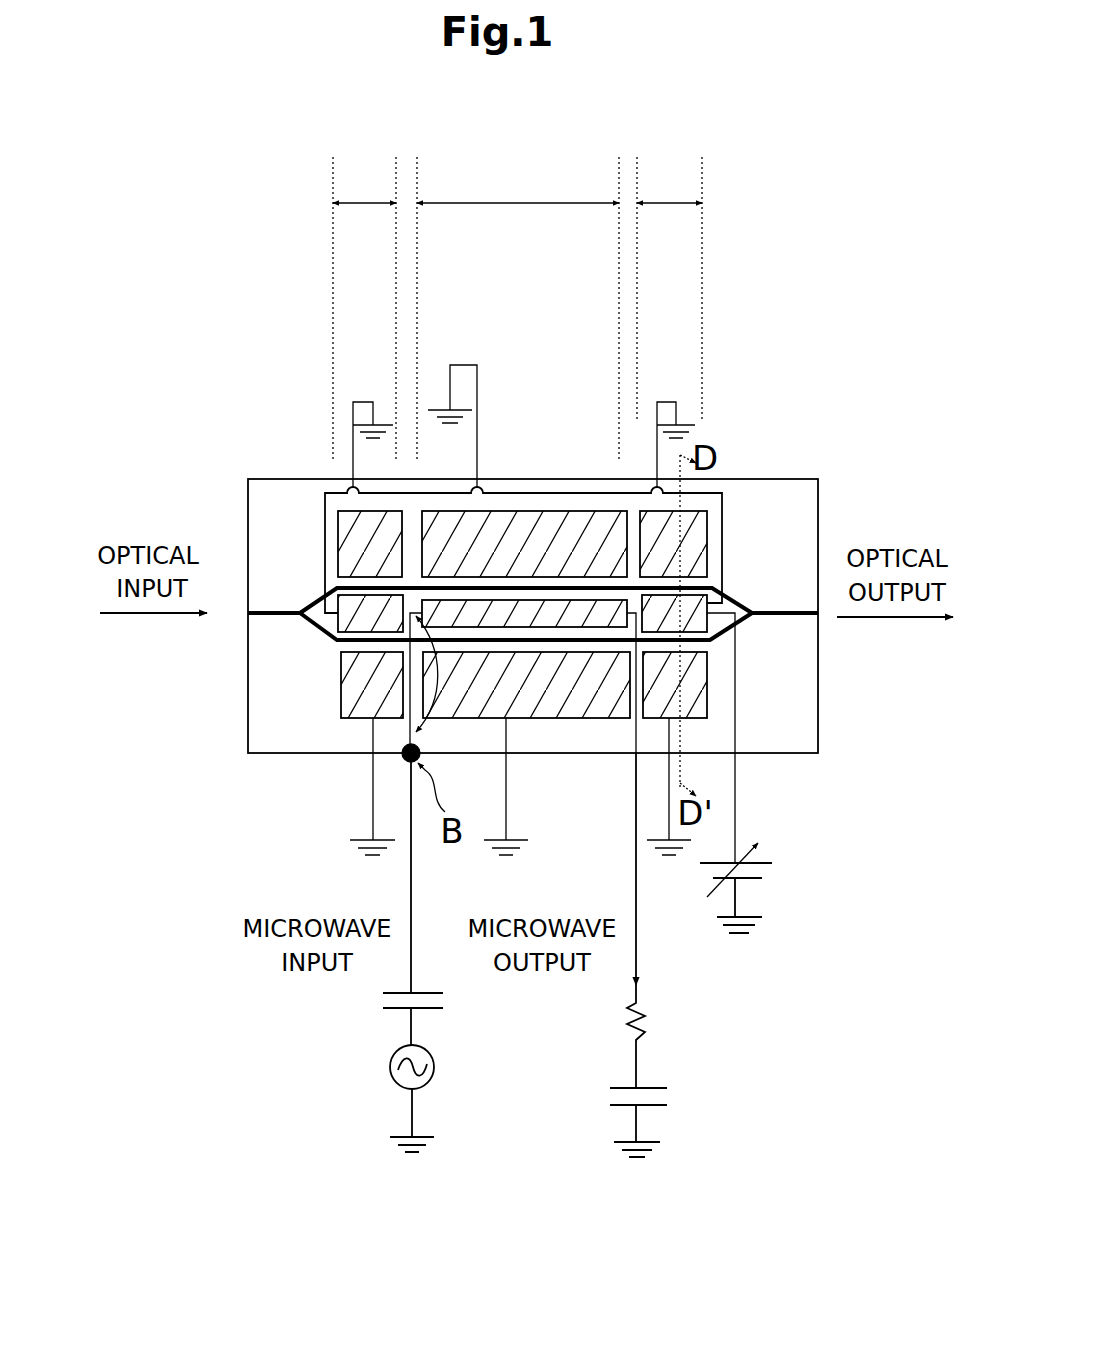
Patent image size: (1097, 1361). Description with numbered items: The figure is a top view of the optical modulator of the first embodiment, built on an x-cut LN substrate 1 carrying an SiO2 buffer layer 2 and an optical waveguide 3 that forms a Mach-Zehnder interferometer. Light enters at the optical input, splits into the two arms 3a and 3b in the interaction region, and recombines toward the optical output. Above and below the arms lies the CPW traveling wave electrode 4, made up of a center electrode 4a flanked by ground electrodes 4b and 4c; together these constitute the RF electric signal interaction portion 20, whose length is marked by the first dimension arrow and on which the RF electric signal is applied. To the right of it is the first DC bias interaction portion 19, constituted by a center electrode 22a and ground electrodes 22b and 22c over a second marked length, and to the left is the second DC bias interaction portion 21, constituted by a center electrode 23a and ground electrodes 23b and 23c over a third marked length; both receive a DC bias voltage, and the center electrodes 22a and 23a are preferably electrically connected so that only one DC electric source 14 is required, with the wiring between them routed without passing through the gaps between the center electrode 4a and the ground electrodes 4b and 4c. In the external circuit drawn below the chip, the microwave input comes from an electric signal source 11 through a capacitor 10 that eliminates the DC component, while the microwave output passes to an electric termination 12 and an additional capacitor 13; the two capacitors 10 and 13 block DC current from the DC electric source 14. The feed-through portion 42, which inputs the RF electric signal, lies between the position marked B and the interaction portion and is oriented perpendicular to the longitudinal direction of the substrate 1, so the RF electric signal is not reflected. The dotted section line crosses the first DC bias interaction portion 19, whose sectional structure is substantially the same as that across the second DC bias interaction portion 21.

The x-cut LN substrate 1 is at (248, 538).
The SiO2 buffer layer 2 is at (278, 502).
The optical waveguide 3 is at (532, 587).
The arm 3a is at (608, 590).
The arm 3b is at (580, 642).
The CPW traveling wave electrode 4 is at (523, 537).
The center electrode 4a is at (497, 593).
The ground electrode 4b is at (493, 522).
The ground electrode 4c is at (513, 690).
The capacitor 10 is at (387, 1010).
The electric signal source 11 is at (390, 1078).
The electric termination 12 is at (640, 1015).
The additional capacitor 13 is at (623, 1107).
The DC electric source 14 is at (772, 870).
The first DC bias interaction portion 19 is at (700, 140).
The RF electric signal interaction portion 20 is at (420, 152).
The second DC bias interaction portion 21 is at (397, 140).
The center electrode 22a is at (707, 602).
The ground electrode 22b is at (700, 565).
The ground electrode 22c is at (708, 690).
The center electrode 23a is at (342, 605).
The ground electrode 23b is at (332, 577).
The ground electrode 23c is at (355, 665).
The feed-through portion 42 is at (450, 674).